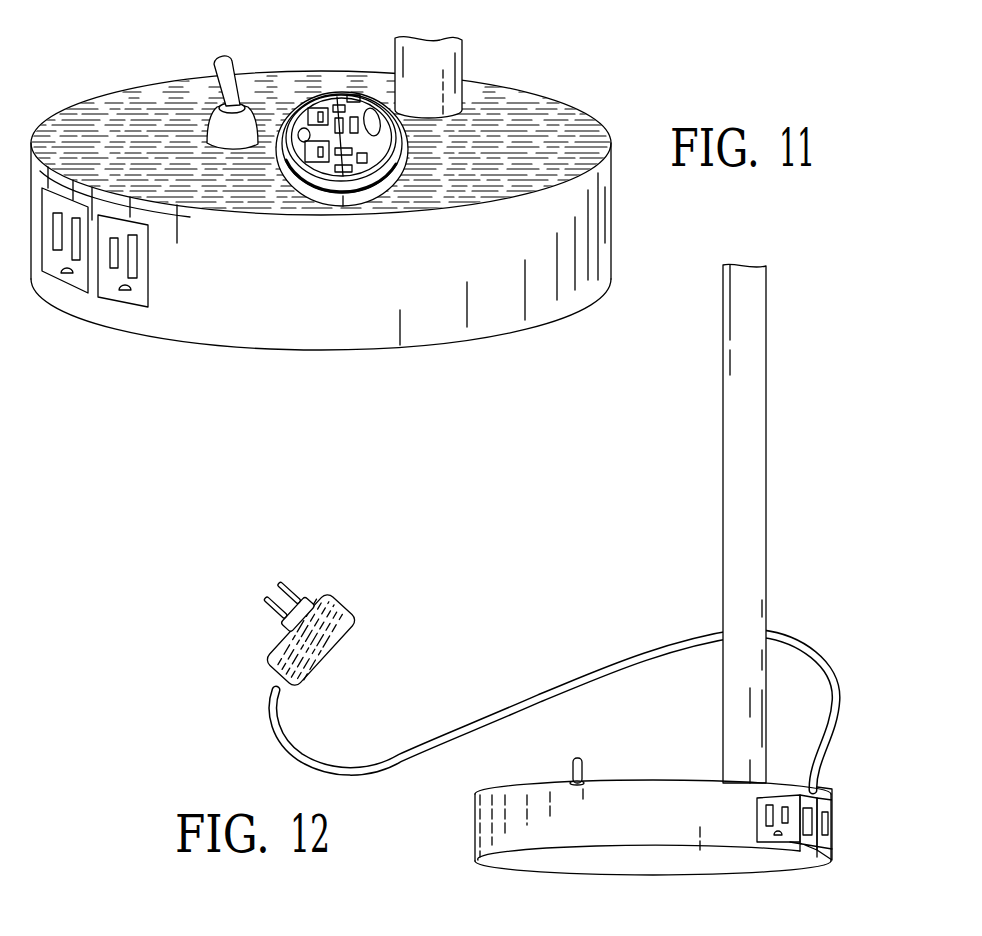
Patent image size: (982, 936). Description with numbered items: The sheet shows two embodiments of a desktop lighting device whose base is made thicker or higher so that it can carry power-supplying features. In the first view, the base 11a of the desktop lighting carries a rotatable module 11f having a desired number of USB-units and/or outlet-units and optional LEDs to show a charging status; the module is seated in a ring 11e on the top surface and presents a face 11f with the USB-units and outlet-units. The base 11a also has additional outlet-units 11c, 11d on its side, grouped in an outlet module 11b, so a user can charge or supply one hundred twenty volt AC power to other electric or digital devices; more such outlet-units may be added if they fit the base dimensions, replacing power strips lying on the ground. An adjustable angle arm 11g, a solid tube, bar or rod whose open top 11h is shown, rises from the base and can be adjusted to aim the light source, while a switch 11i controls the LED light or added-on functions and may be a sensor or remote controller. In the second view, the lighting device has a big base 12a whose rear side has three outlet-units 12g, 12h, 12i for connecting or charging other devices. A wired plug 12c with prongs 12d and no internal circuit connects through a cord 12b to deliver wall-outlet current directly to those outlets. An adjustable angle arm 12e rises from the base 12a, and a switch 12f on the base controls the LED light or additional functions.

In FIG. 11, the base 11a is at (283, 327).
In FIG. 11, the outlet module band 11b is at (150, 263).
In FIG. 11, the outlet-unit 11c is at (80, 277).
In FIG. 11, the outlet-unit 11d is at (110, 283).
In FIG. 11, the top receptacle bezel ring 11e is at (407, 160).
In FIG. 11, the rotatable module 11f is at (348, 181).
In FIG. 11, the adjustable angle arm 11g is at (462, 55).
In FIG. 11, the post top opening 11h is at (393, 63).
In FIG. 11, the switch 11i is at (213, 130).
In FIG. 12, the base 12a is at (537, 840).
In FIG. 12, the power cord 12b is at (817, 643).
In FIG. 12, the wired plug 12c is at (360, 622).
In FIG. 12, the prong 12d is at (280, 577).
In FIG. 12, the adjustable angle arm 12e is at (737, 592).
In FIG. 12, the switch 12f is at (578, 757).
In FIG. 12, the end receptacle 12g is at (832, 820).
In FIG. 12, the middle receptacle 12h is at (807, 840).
In FIG. 12, the front receptacle 12i is at (763, 833).